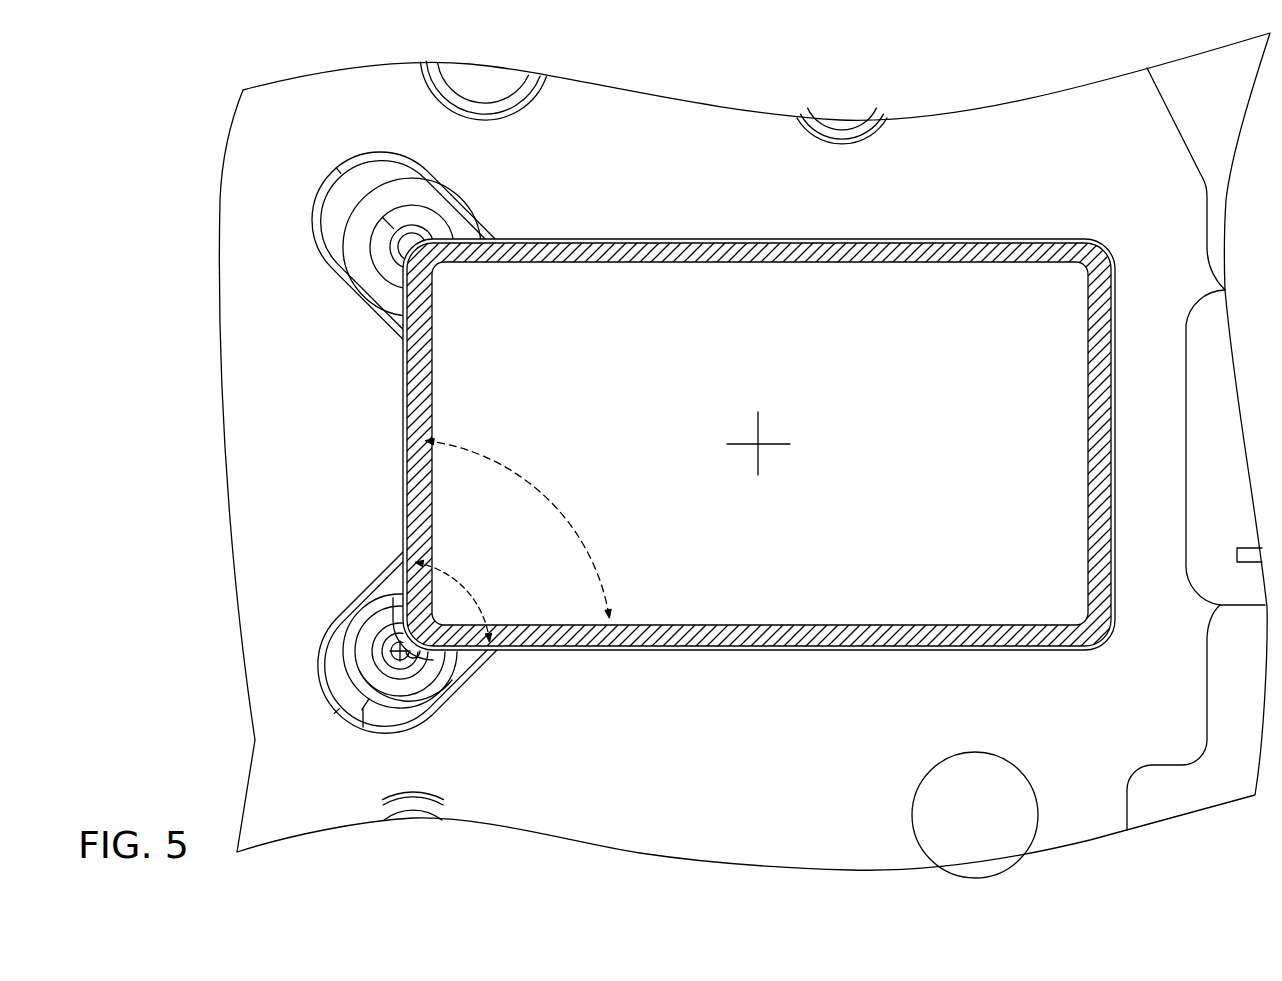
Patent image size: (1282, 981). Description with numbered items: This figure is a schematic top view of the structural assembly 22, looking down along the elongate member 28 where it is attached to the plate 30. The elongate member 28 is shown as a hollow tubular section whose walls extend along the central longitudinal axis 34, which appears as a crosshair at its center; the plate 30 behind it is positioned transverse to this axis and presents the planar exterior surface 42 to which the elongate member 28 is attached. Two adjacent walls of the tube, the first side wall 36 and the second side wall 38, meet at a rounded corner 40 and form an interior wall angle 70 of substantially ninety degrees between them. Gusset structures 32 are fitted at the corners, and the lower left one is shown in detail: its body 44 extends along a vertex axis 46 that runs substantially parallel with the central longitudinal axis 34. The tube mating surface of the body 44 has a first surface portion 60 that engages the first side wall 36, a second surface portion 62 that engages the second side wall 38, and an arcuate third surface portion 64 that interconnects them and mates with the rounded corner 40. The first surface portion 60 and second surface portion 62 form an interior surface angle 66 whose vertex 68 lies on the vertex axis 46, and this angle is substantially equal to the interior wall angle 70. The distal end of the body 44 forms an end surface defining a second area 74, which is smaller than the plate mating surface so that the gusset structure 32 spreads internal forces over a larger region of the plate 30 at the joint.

The structural assembly 22 is at (614, 400).
The elongate member 28 is at (722, 243).
The plate 30 is at (273, 137).
The gusset structure 32 is at (433, 182).
The central longitudinal axis 34 is at (758, 447).
The first side wall 36 is at (418, 410).
The second side wall 38 is at (762, 654).
The corner 40 is at (432, 608).
The planar exterior surface 42 is at (306, 425).
The body 44 is at (360, 668).
The vertex axis 46 is at (395, 645).
The first surface portion 60 is at (402, 583).
The second surface portion 62 is at (470, 668).
The third surface portion 64 is at (405, 655).
The interior surface angle 66 is at (448, 573).
The vertex 68 is at (377, 647).
The interior wall angle 70 is at (545, 485).
The second area 74 is at (410, 665).